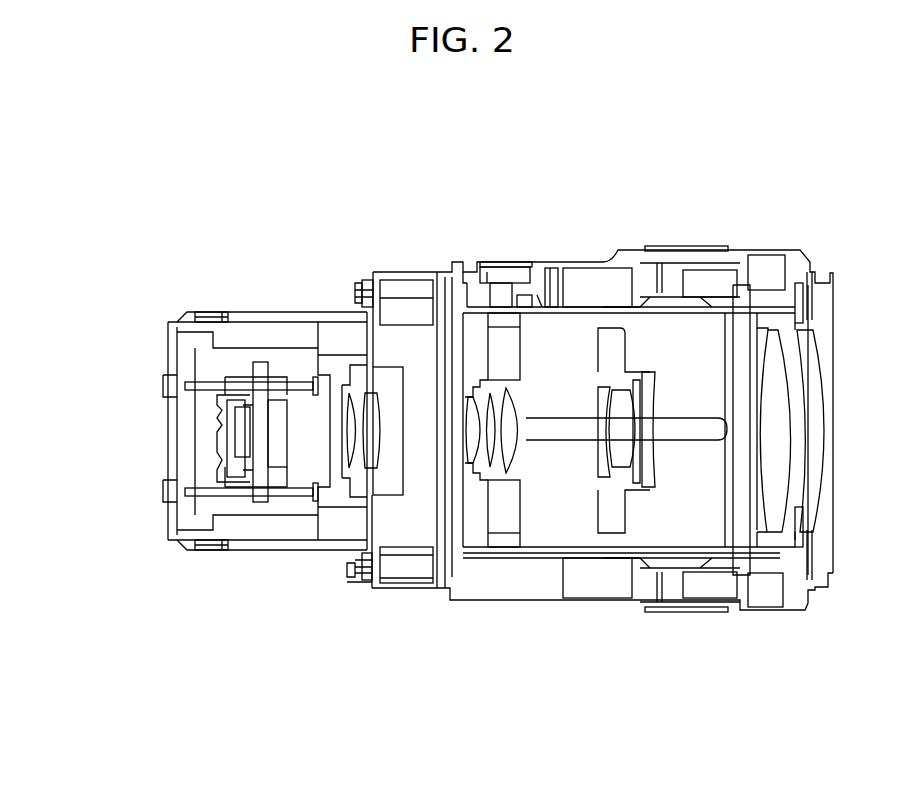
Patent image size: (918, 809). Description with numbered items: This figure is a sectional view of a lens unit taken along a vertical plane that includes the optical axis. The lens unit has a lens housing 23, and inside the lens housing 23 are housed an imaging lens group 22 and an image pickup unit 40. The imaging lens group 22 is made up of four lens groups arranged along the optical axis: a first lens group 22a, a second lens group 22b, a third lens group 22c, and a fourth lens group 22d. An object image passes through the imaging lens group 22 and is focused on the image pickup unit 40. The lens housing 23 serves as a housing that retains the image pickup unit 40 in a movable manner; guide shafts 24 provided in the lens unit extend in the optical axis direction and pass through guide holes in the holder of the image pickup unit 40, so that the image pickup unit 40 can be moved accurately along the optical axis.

The imaging lens group 22 is at (556, 504).
The first lens group 22a is at (772, 503).
The second lens group 22b is at (618, 433).
The third lens group 22c is at (505, 447).
The fourth lens group 22d is at (357, 430).
The lens housing 23 is at (262, 320).
The guide shafts 24 is at (210, 385).
The image pickup unit 40 is at (240, 455).